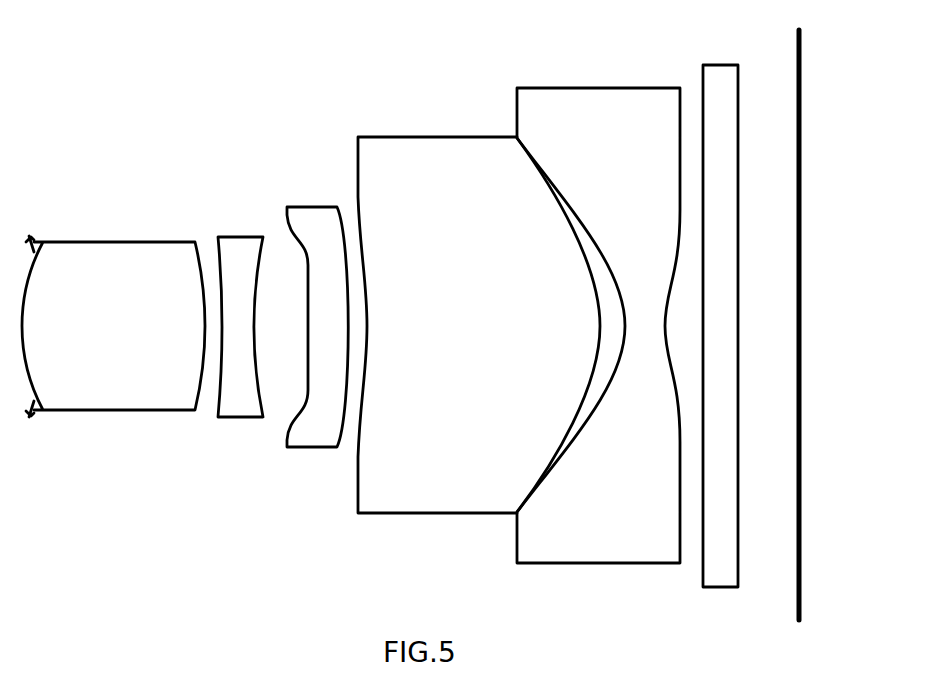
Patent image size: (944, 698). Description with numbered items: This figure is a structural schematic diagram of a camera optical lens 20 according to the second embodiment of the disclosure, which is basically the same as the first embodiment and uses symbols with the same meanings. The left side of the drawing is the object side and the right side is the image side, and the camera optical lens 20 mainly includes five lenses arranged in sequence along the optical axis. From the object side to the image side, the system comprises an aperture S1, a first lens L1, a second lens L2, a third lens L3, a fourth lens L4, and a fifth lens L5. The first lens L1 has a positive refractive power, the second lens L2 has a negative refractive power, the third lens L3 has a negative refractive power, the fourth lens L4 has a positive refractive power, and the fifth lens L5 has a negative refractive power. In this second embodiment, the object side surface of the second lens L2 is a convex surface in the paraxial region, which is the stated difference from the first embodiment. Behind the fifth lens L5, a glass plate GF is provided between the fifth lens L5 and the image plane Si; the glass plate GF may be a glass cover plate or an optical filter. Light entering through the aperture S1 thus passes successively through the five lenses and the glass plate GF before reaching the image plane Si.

The camera optical lens 20 is at (436, 36).
The aperture S1 is at (29, 313).
The first lens L1 is at (113, 314).
The second lens L2 is at (240, 315).
The third lens L3 is at (317, 313).
The fourth lens L4 is at (479, 313).
The fifth lens L5 is at (598, 312).
The glass plate GF is at (720, 313).
The image plane Si is at (796, 313).